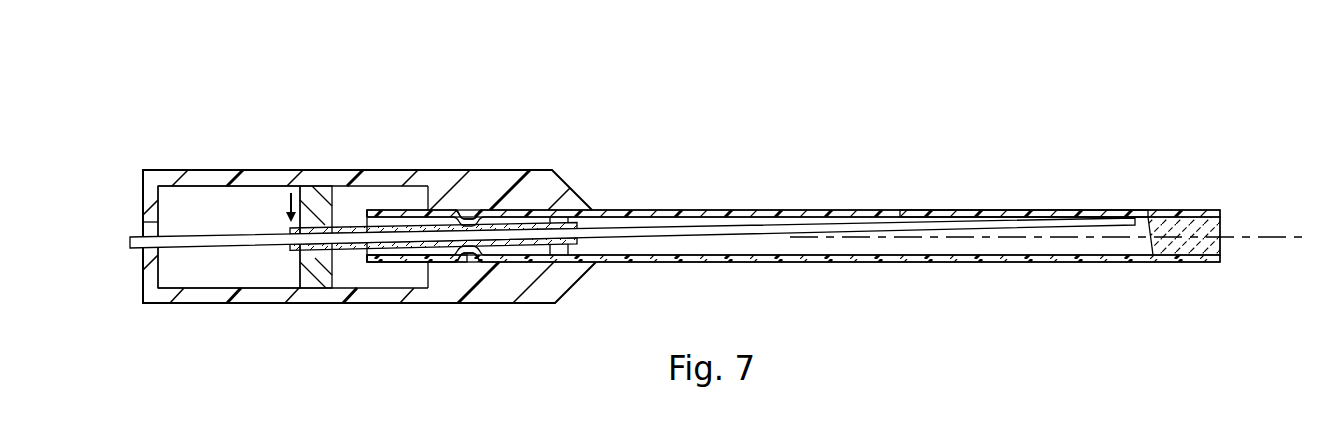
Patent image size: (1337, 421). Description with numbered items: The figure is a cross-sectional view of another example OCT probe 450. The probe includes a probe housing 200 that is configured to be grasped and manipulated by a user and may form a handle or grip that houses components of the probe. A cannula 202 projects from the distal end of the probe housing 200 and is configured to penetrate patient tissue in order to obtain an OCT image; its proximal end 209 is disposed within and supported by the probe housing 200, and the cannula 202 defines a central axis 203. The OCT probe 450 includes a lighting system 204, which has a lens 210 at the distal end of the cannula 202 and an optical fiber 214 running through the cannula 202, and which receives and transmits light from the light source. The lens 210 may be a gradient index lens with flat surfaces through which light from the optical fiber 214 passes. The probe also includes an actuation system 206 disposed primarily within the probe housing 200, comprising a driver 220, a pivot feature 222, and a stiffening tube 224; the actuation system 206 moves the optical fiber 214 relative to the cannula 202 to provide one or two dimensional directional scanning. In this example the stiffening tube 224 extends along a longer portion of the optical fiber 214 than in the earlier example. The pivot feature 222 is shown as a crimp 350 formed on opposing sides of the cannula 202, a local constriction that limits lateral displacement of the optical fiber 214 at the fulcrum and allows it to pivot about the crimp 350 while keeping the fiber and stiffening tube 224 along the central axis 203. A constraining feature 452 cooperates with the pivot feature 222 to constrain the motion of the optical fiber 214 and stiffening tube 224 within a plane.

The probe housing 200 is at (199, 307).
The cannula 202 is at (984, 270).
The central axis 203 is at (1273, 238).
The lighting system 204 is at (1035, 188).
The actuation system 206 is at (314, 152).
The proximal end 209 is at (380, 263).
The lens 210 is at (1182, 251).
The optical fiber 214 is at (855, 222).
The driver 220 is at (317, 281).
The pivot feature 222 is at (466, 263).
The stiffening tube 224 is at (357, 222).
The crimp 350 is at (475, 220).
The OCT probe 450 is at (731, 118).
The constraining feature 452 is at (590, 249).